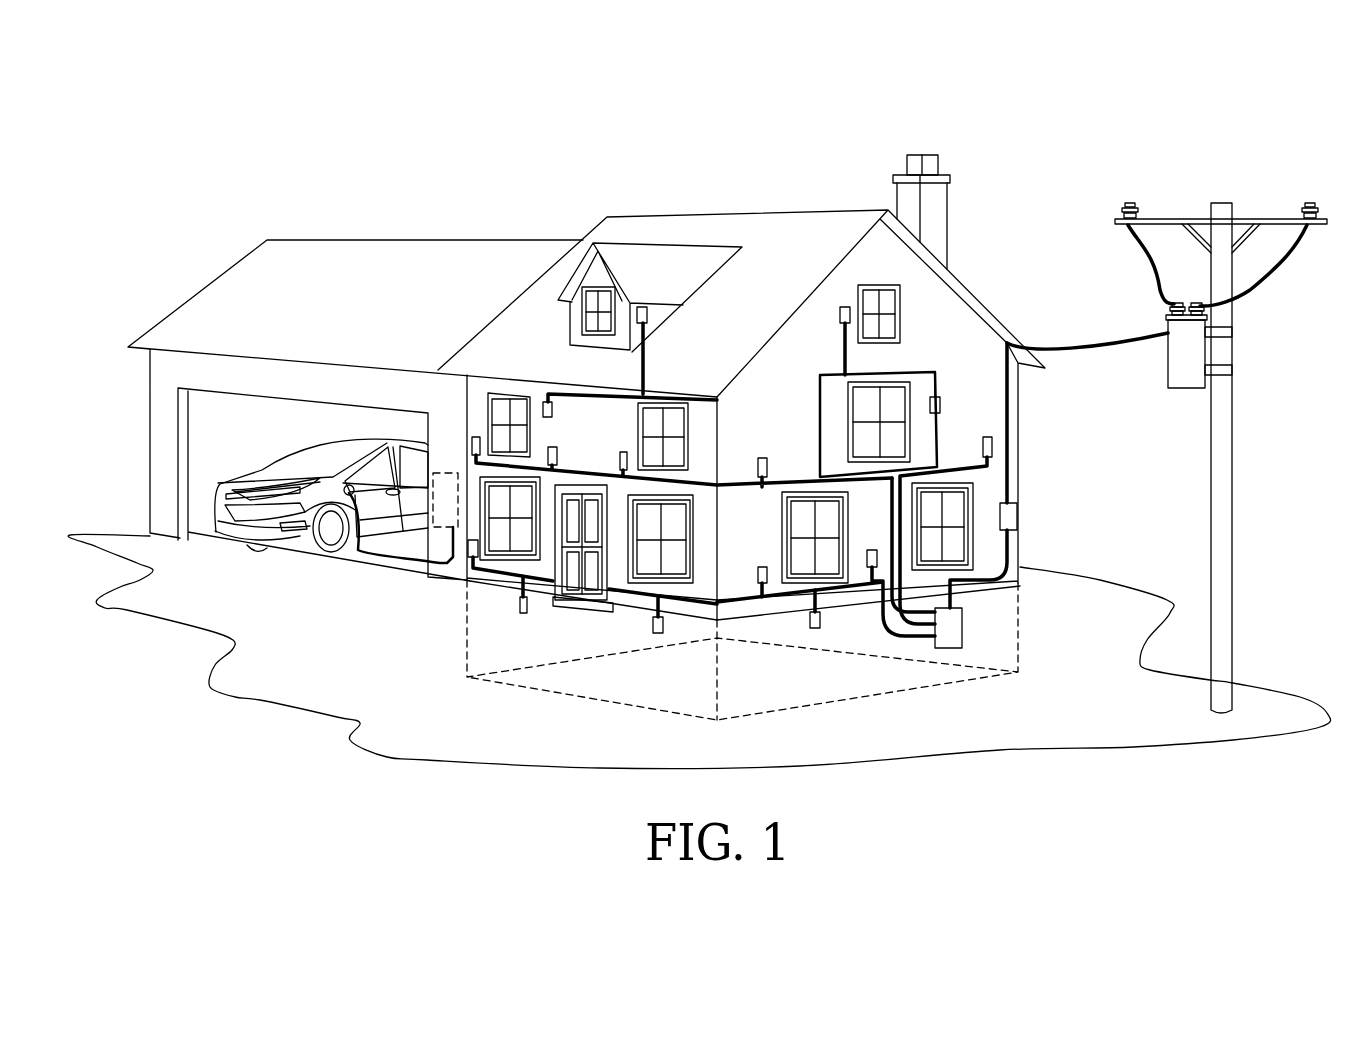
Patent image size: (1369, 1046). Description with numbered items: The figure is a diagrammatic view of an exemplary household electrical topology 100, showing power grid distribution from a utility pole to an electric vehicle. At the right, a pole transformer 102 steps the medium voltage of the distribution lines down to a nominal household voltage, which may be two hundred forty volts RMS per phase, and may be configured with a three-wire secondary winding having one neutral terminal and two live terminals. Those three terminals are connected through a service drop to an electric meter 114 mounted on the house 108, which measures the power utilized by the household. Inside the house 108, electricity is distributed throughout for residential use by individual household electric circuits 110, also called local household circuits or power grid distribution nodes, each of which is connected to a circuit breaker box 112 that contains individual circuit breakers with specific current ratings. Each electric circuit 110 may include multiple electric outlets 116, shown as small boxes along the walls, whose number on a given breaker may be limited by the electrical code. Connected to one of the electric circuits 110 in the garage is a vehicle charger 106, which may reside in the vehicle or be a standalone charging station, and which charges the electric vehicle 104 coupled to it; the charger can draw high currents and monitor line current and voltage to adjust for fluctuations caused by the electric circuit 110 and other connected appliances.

The household electrical topology 100 is at (1077, 116).
The pole transformer 102 is at (1168, 353).
The electric vehicle 104 is at (293, 546).
The vehicle charger 106 is at (446, 473).
The house 108 is at (744, 213).
The household electric circuit 110 is at (773, 400).
The circuit breaker box 112 is at (963, 636).
The electric meter 114 is at (1019, 516).
The electric outlets 116 is at (941, 404).